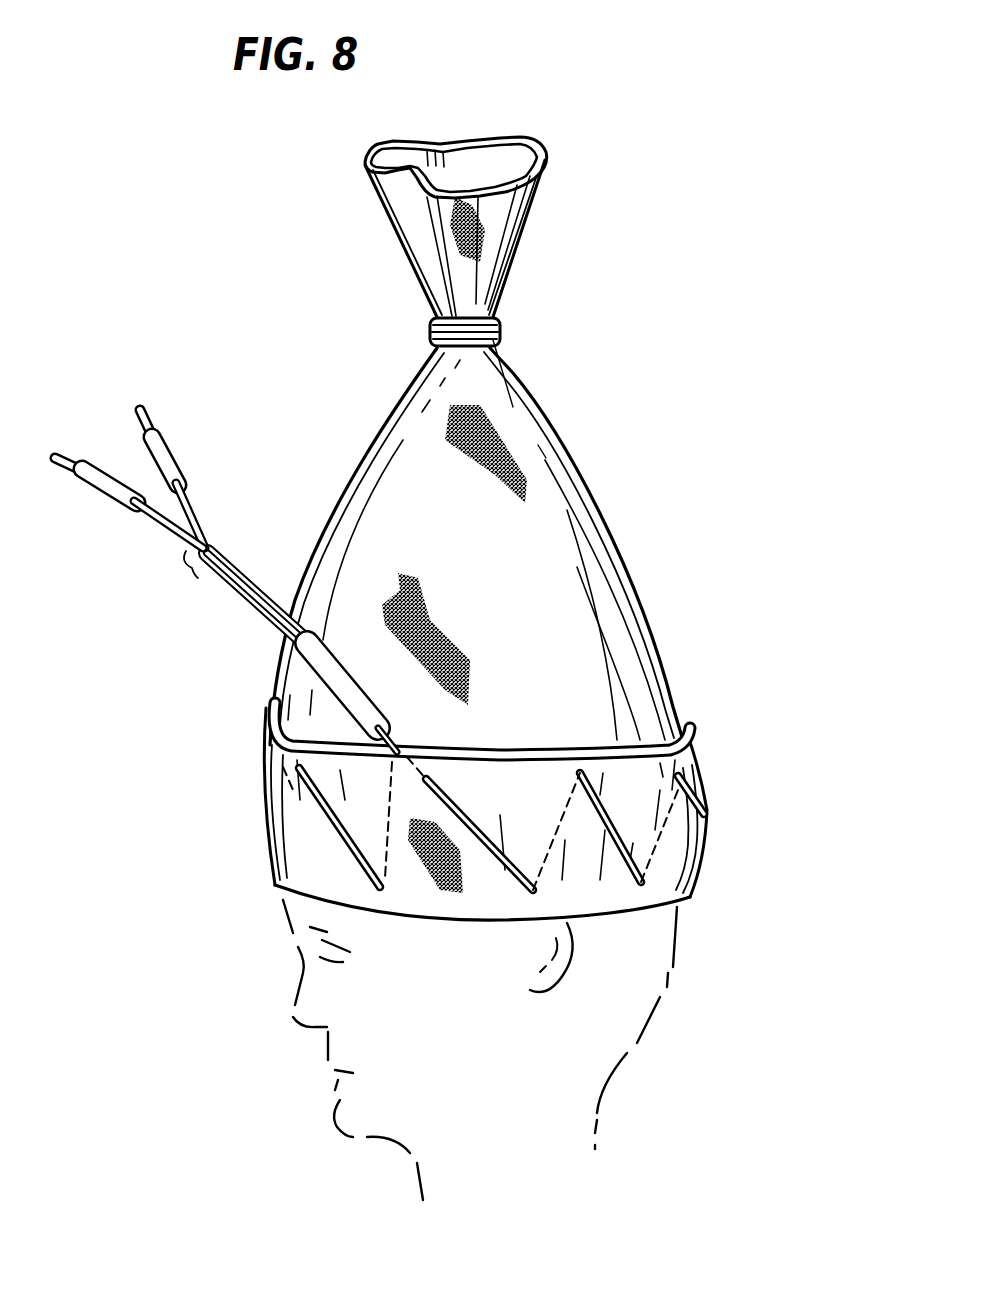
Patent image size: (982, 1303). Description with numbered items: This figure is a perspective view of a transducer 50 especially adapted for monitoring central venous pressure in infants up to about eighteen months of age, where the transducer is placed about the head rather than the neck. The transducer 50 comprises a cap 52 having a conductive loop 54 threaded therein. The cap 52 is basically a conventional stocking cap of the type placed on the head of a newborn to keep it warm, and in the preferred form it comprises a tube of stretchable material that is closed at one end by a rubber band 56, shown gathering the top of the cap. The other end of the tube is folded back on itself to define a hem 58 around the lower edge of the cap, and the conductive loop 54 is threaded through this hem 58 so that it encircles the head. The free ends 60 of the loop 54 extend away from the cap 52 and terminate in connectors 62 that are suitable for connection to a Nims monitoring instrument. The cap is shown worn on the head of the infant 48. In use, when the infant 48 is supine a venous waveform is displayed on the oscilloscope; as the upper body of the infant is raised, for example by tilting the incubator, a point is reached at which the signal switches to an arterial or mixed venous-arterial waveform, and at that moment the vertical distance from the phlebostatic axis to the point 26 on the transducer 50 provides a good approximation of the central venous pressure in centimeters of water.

The point on the transducer 26 is at (474, 758).
The infant 48 is at (663, 1006).
The transducer 50 is at (680, 561).
The cap 52 is at (540, 430).
The conductive loop 54 is at (615, 830).
The rubber band 56 is at (500, 337).
The hem 58 is at (300, 824).
The free ends of the loop 60 is at (250, 603).
The connectors 62 is at (168, 458).